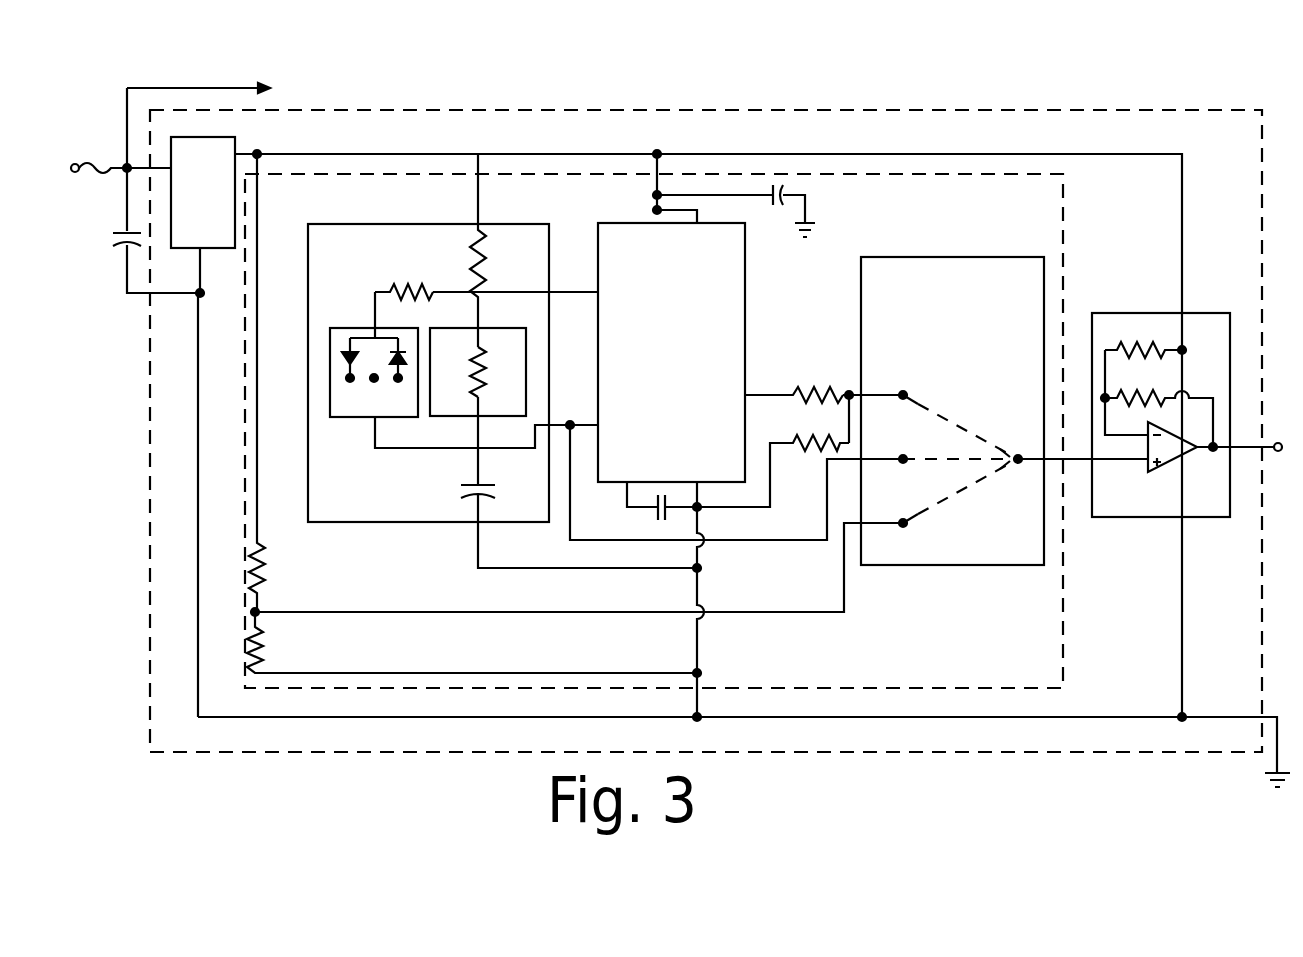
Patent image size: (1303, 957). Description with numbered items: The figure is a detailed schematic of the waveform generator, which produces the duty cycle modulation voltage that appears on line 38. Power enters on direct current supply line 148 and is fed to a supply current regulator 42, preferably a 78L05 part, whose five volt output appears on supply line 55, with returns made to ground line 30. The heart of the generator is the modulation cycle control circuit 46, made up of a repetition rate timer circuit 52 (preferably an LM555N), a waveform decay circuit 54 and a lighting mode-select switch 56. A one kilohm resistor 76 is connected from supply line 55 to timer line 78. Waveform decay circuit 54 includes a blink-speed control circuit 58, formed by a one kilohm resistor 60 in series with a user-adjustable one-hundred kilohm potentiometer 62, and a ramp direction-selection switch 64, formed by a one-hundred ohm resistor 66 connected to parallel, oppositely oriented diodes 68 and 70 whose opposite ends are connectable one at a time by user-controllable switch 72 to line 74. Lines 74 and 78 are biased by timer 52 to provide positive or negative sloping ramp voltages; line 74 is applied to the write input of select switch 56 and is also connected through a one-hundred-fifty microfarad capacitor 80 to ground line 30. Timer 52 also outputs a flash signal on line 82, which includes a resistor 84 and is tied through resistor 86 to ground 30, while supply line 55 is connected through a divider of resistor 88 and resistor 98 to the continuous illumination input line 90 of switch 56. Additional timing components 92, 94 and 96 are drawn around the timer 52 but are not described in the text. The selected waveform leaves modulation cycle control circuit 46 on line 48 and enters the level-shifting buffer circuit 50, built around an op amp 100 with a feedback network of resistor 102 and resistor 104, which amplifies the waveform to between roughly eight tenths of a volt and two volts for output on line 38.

The direct current supply line 148 is at (188, 88).
The ground line 30 is at (1245, 716).
The modulation cycle control circuit 46 is at (998, 672).
The supply current regulator 42 is at (192, 216).
The 5 volt supply line 55 is at (622, 152).
The repetition rate timer circuit 52 is at (660, 353).
The diode 68 is at (406, 373).
The waveform decay circuit 54 is at (419, 519).
The timer line 78 is at (587, 290).
The resistor 76 is at (485, 268).
The resistor 66 is at (413, 290).
The blink-speed control circuit 58 is at (530, 350).
The resistor 60 is at (482, 360).
The potentiometer 62 is at (486, 402).
The capacitor 80 is at (492, 493).
The ramp direction-selection switch 64 is at (350, 338).
The diode 70 is at (400, 338).
The user-controllable switch 72 is at (386, 395).
The line 74 is at (558, 432).
The timer output line 92 is at (636, 482).
The capacitor 94 is at (655, 512).
The ground line 96 is at (697, 482).
The resistor 86 is at (785, 446).
The resistor 84 is at (806, 390).
The line 82 is at (849, 392).
The continuous illumination input line 90 is at (764, 612).
The resistor 88 is at (262, 584).
The resistor 98 is at (262, 664).
The lighting mode-select switch 56 is at (941, 352).
The line 48 is at (1075, 458).
The buffer circuit 50 is at (1107, 501).
The op amp 100 is at (1178, 448).
The resistor 104 is at (1160, 349).
The resistor 102 is at (1160, 396).
The line 38 is at (1262, 447).